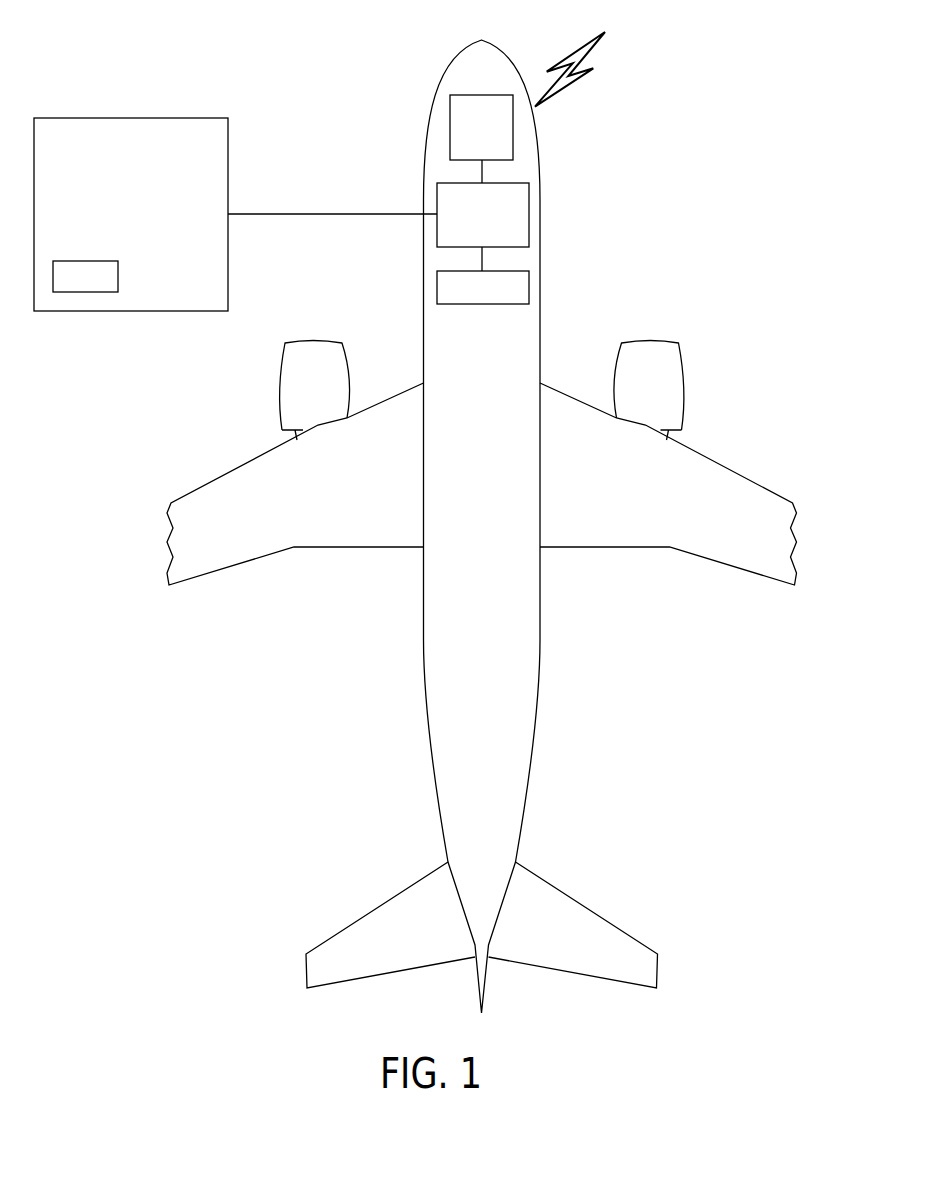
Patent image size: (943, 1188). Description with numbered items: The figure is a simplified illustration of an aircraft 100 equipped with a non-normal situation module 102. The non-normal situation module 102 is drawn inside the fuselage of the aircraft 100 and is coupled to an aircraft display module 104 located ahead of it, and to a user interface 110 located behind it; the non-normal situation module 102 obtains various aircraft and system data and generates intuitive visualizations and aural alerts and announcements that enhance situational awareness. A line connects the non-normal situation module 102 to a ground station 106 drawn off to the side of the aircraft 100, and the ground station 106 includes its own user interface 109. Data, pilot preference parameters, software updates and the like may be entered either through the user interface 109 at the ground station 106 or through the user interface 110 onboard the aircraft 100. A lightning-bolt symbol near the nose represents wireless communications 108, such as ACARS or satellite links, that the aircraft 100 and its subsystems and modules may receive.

The aircraft 100 is at (536, 320).
The non-normal situation module 102 is at (437, 197).
The aircraft display module 104 is at (450, 120).
The ground station 106 is at (147, 118).
The wireless communications 108 is at (577, 50).
The user interface 109 is at (118, 281).
The user interface 110 is at (437, 287).